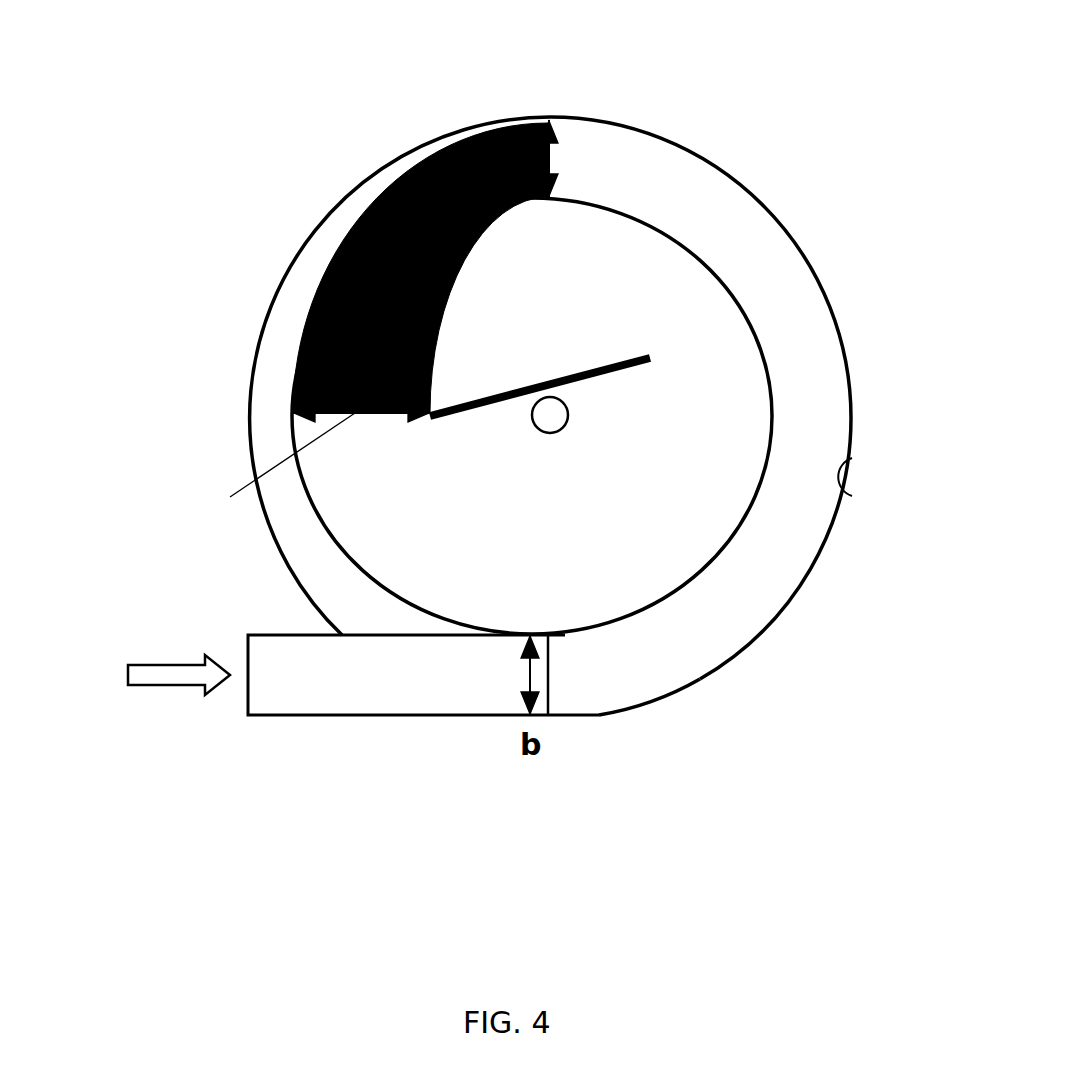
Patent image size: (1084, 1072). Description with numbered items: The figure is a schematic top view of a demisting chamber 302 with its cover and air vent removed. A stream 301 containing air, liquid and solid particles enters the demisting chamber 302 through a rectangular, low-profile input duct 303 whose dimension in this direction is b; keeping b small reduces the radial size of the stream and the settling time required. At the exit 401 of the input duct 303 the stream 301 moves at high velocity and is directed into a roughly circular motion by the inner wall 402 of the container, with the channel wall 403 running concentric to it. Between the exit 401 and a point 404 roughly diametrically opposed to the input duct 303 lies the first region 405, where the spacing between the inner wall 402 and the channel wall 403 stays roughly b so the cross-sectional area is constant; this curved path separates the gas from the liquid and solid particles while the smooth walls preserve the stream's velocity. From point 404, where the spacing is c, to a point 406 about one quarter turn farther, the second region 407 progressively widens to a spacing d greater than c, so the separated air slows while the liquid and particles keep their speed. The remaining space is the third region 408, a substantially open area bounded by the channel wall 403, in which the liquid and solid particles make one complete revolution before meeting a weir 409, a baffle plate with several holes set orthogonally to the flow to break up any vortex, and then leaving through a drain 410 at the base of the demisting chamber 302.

The stream 301 is at (170, 692).
The demisting chamber 302 is at (240, 107).
The input duct 303 is at (410, 717).
The exit of the input duct 401 is at (550, 677).
The inner wall of the container 402 is at (845, 495).
The channel wall 403 is at (737, 537).
The point diametrically opposed to the input duct 404 is at (550, 120).
The first region 405 is at (732, 593).
The point one quarter turn farther along the channel 406 is at (295, 418).
The second region 407 is at (410, 238).
The third region 408 is at (350, 515).
The weir 409 is at (630, 353).
The drain 410 is at (568, 415).